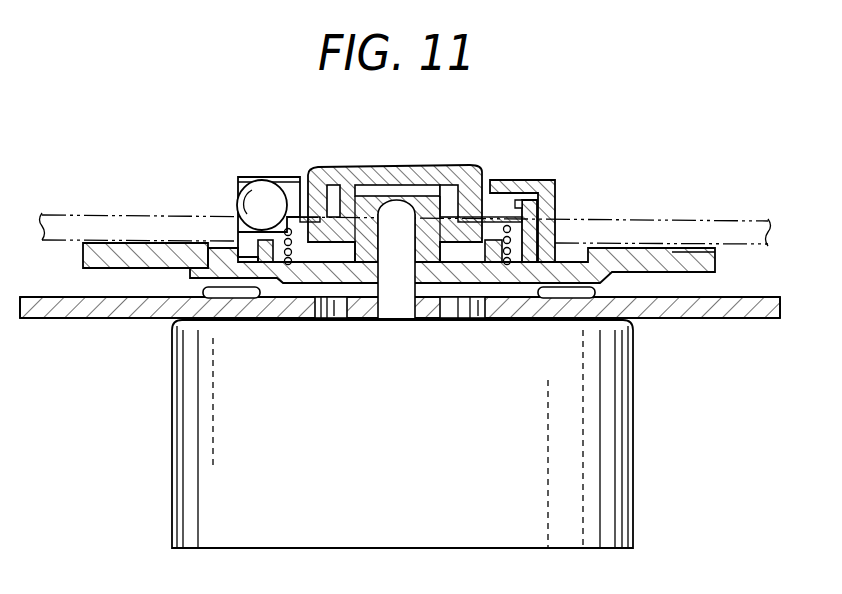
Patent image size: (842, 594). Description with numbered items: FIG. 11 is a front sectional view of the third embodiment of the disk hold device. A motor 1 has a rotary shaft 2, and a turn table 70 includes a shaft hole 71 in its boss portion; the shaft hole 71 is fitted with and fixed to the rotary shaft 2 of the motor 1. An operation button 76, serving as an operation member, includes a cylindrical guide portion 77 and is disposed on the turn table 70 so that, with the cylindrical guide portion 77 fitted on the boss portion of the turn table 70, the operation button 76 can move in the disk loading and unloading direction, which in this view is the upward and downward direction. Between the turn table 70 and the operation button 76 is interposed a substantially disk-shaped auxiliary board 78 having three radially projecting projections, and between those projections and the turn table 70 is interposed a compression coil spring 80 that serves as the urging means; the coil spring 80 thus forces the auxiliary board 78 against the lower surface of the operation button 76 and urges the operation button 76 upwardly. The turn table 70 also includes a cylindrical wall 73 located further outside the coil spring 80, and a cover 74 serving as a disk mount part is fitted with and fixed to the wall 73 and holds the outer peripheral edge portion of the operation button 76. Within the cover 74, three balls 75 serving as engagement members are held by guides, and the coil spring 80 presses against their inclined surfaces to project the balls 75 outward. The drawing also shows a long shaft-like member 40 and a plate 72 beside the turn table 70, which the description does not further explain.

The motor 1 is at (632, 422).
The rotary shaft 2 is at (390, 185).
The shaft 40 is at (700, 221).
The turn table 70 is at (716, 262).
The shaft hole 71 is at (408, 250).
The plate 72 is at (108, 252).
The cylindrical wall 73 is at (527, 200).
The cover 74 is at (556, 188).
The balls 75 is at (238, 190).
The operation button 76 is at (455, 168).
The cylindrical guide portion 77 is at (455, 283).
The auxiliary board 78 is at (346, 284).
The compression coil spring 80 is at (516, 286).